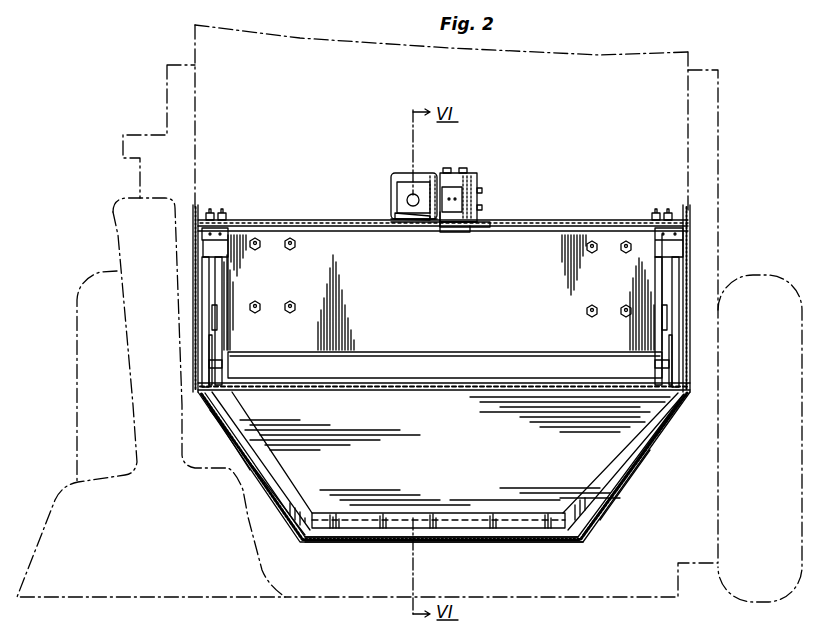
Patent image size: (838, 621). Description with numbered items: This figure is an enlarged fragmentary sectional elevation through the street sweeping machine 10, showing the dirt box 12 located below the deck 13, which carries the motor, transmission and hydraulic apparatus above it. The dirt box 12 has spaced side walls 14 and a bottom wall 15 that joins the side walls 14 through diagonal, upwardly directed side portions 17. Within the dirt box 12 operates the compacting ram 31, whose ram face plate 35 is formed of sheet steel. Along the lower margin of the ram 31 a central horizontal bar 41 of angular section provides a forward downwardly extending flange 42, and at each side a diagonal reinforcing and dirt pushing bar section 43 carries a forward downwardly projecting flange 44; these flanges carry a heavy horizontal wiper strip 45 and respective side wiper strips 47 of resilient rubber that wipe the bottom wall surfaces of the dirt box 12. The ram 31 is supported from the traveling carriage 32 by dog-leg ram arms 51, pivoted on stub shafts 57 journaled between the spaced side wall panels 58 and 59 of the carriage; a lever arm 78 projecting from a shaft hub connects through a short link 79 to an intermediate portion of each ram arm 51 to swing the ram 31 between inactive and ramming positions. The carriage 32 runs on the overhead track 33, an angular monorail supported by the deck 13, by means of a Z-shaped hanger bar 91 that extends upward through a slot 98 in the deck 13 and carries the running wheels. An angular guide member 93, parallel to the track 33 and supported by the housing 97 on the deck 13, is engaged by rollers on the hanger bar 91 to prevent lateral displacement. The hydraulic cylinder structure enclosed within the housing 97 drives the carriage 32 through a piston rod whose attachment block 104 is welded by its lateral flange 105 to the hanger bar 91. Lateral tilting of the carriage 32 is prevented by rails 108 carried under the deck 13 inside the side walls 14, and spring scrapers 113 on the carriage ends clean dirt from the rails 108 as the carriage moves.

The vehicle body outline 10 is at (727, 125).
The dirt box 12 is at (612, 512).
The deck 13 is at (598, 220).
The side walls 14 is at (193, 279).
The bottom wall 15 is at (524, 542).
The side portions 17 is at (292, 522).
The ram 31 is at (555, 376).
The traveling carriage 32 is at (543, 242).
The overhead track 33 is at (489, 226).
The ram face plate 35 is at (462, 433).
The central horizontal bar 41 is at (400, 512).
The forward downwardly extending flange 42 is at (465, 515).
The side bar section 43 is at (292, 488).
The forward downwardly projecting flange 44 is at (292, 508).
The horizontal wiper strip 45 is at (473, 542).
The wiper strips 47 is at (258, 490).
The ram arms 51 is at (212, 370).
The stub shafts 57 is at (224, 364).
The side wall panel 58 is at (206, 318).
The side wall panel 59 is at (236, 369).
The lever arm 78 is at (219, 290).
The short link 79 is at (218, 325).
The hanger bar 91 is at (440, 236).
The guide member 93 is at (480, 186).
The housing 97 is at (391, 193).
The slot 98 is at (428, 225).
The attachment block 104 is at (420, 190).
The lateral flange 105 is at (407, 223).
The rails 108 is at (222, 214).
The scrapers 113 is at (205, 234).